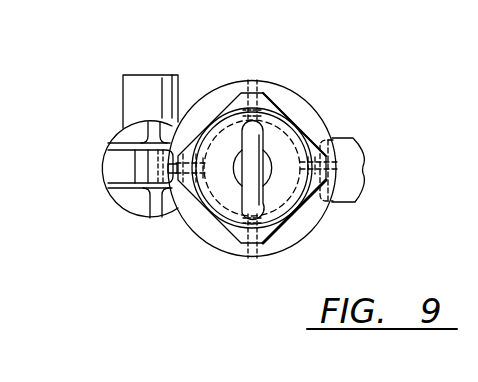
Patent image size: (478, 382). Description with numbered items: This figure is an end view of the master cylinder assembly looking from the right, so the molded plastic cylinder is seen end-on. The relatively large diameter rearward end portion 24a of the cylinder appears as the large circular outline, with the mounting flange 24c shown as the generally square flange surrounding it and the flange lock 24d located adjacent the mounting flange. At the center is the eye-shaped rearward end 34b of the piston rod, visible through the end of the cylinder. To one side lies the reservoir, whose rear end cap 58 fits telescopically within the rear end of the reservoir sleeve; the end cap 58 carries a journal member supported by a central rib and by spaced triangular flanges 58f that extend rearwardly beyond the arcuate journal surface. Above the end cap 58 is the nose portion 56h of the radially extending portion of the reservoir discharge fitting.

The rearward end portion 24a is at (291, 126).
The mounting flange 24c is at (236, 80).
The flange lock 24d is at (271, 108).
The rearward end 34b is at (248, 203).
The nose portion 56h is at (152, 74).
The end cap 58 is at (131, 219).
The triangular flanges 58f is at (121, 204).